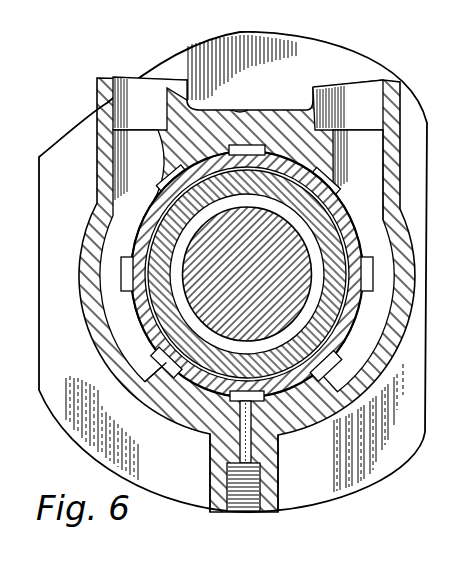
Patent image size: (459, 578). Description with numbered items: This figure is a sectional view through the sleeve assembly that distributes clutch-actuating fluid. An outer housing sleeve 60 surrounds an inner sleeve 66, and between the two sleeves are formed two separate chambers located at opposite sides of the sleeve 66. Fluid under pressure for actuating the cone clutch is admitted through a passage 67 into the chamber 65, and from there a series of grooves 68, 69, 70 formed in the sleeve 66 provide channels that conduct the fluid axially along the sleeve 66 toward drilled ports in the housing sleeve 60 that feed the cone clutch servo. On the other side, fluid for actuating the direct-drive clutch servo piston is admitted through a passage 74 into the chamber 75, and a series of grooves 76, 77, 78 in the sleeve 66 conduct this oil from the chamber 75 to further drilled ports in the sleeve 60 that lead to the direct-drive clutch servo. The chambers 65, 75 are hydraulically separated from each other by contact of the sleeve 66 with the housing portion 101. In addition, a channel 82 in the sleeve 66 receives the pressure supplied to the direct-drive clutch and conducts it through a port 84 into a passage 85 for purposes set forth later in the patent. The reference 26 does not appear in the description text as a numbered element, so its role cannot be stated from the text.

The bearing cup ring 26 is at (222, 382).
The housing sleeve 60 is at (95, 298).
The chamber 65 is at (110, 237).
The sleeve 66 is at (133, 330).
The passage 67 is at (148, 86).
The groove 68 is at (158, 190).
The groove 69 is at (123, 270).
The groove 70 is at (138, 387).
The passage 74 is at (352, 96).
The chamber 75 is at (392, 198).
The groove 76 is at (342, 192).
The groove 77 is at (370, 270).
The groove 78 is at (318, 380).
The channel 82 is at (236, 438).
The port 84 is at (279, 448).
The passage 85 is at (260, 487).
The housing portion 101 is at (237, 110).